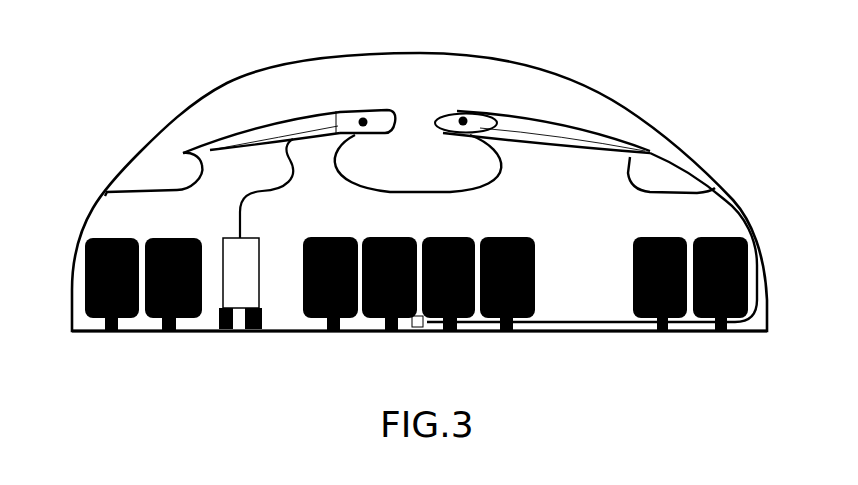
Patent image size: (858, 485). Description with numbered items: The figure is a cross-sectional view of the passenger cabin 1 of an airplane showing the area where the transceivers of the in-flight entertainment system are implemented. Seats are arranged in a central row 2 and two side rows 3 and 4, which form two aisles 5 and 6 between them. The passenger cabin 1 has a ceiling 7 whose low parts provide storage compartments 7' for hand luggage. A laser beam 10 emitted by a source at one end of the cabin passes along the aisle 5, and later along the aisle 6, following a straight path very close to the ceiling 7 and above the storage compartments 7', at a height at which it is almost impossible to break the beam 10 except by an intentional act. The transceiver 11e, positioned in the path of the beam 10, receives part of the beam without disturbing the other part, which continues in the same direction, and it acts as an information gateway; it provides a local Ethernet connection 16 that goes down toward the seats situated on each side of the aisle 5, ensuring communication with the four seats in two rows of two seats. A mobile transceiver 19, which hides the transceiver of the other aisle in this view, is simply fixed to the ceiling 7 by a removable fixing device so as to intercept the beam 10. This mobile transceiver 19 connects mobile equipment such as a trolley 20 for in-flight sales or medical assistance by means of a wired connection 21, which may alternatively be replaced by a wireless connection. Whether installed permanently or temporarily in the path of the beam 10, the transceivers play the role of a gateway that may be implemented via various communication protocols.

The passenger cabin 1 is at (655, 119).
The central row 2 is at (537, 338).
The side row 3 is at (755, 336).
The side row 4 is at (203, 336).
The aisle 5 is at (592, 300).
The aisle 6 is at (289, 292).
The ceiling 7 is at (603, 75).
The storage compartments 7' is at (414, 165).
The laser beam 10 is at (448, 110).
The transceiver 11e is at (477, 115).
The local Ethernet connection 16 is at (733, 205).
The mobile transceiver 19 is at (352, 112).
The trolley 20 is at (240, 318).
The wired connection 21 is at (278, 191).